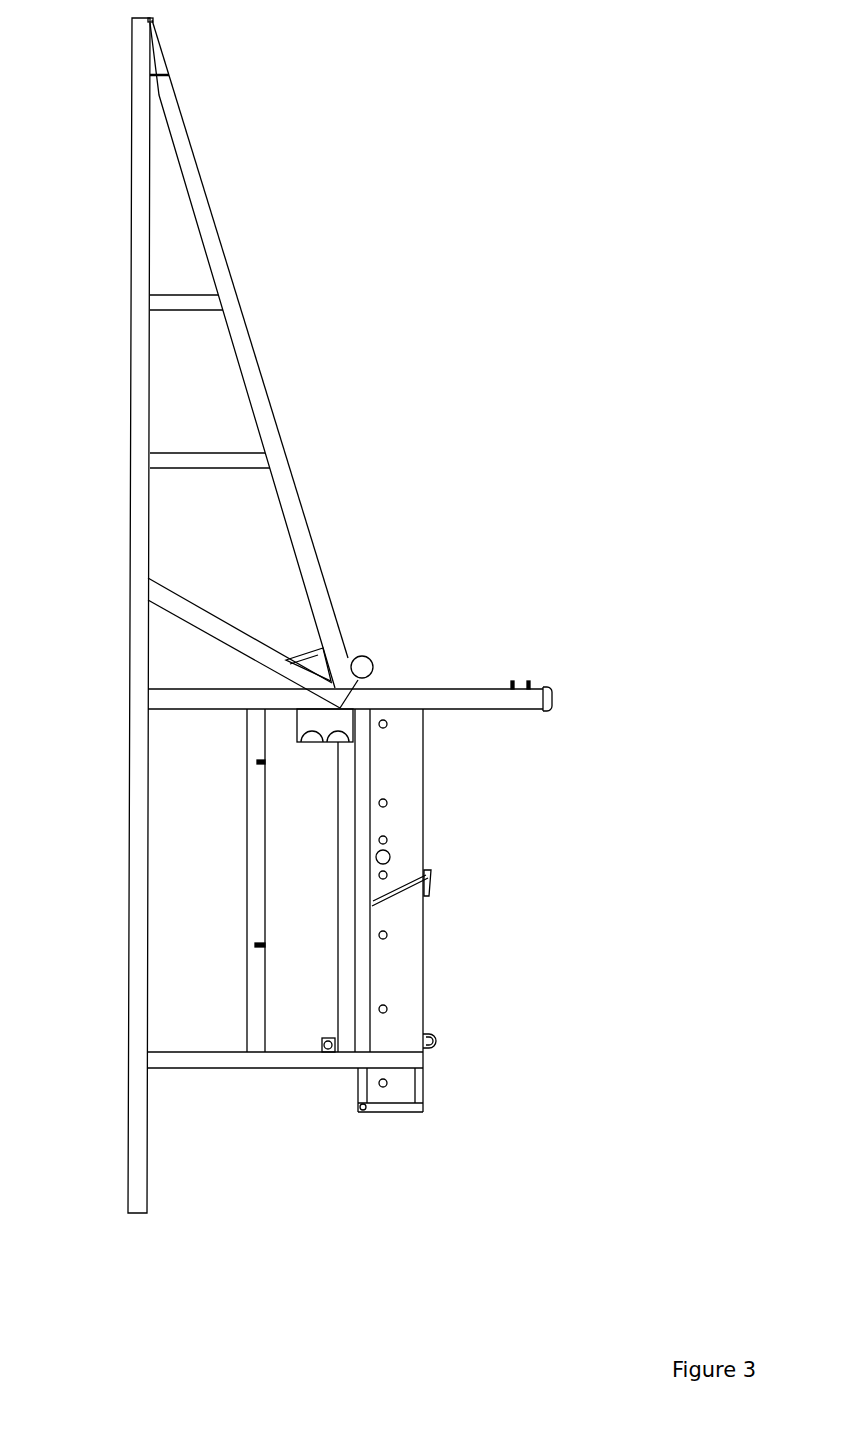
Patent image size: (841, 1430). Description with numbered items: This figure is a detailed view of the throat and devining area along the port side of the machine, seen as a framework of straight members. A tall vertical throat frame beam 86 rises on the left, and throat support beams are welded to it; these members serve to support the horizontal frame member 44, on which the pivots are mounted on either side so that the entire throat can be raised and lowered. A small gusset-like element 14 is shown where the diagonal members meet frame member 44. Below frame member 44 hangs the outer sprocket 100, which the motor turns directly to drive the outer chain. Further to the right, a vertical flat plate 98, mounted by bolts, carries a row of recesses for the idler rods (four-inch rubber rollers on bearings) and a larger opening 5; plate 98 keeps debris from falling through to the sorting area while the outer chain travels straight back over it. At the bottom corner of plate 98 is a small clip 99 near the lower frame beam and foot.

The throat frame beam 86 is at (140, 532).
The gusset bracket 14 is at (308, 657).
The frame member 44 is at (437, 702).
The outer sprocket 100 is at (338, 742).
The pivot hole 5 is at (392, 858).
The flat plate 98 is at (405, 953).
The clip 99 is at (432, 1050).